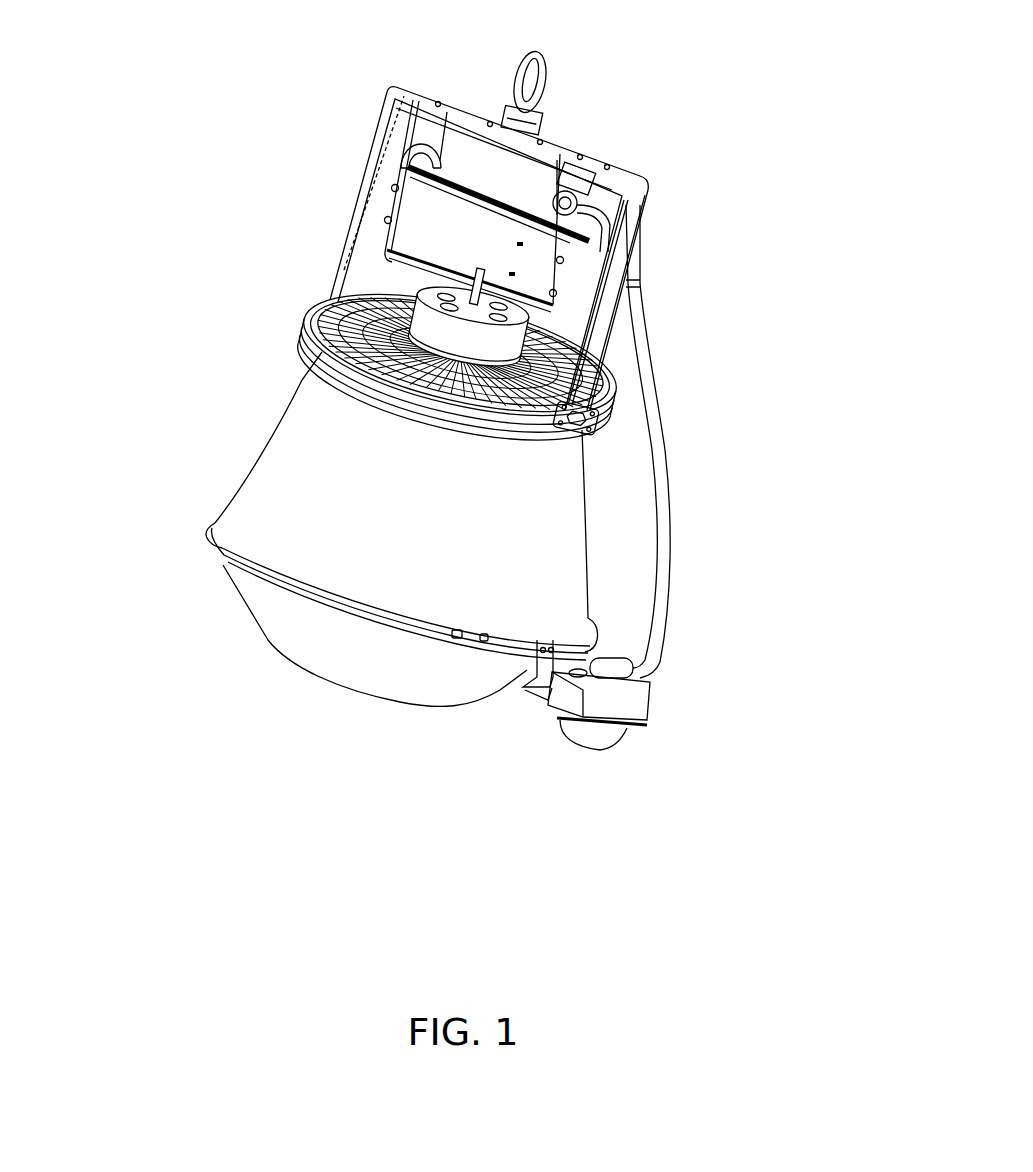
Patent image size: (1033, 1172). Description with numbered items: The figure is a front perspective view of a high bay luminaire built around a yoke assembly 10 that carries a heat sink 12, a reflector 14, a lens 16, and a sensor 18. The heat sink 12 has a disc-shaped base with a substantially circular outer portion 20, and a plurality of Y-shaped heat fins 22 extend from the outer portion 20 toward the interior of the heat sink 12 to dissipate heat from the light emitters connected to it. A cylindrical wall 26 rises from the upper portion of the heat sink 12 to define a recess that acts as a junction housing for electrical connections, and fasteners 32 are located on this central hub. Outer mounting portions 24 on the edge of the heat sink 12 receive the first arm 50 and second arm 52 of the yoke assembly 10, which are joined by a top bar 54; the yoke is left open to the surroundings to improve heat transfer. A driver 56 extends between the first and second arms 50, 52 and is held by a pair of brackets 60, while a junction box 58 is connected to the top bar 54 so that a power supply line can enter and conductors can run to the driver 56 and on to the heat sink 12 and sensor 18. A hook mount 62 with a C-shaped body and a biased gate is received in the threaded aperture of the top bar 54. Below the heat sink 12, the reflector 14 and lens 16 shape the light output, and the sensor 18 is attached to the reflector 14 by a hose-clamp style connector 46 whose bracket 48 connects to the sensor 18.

The yoke assembly 10 is at (386, 85).
The heat sink 12 is at (292, 343).
The reflector 14 is at (256, 480).
The lens 16 is at (273, 647).
The sensor 18 is at (636, 746).
The outer portion 20 is at (305, 318).
The heat fins 22 is at (336, 300).
The outer mounting portions 24 is at (590, 424).
The cylindrical wall 26 is at (505, 348).
The motor fasteners 32 is at (538, 310).
The hose-clamp style connector 46 is at (457, 638).
The bracket 48 is at (541, 688).
The first arm 50 is at (594, 362).
The second arm 52 is at (352, 247).
The top bar 54 is at (623, 178).
The driver 56 is at (537, 270).
The junction box 58 is at (462, 143).
The brackets 60 is at (372, 190).
The hook mount 62 is at (562, 72).